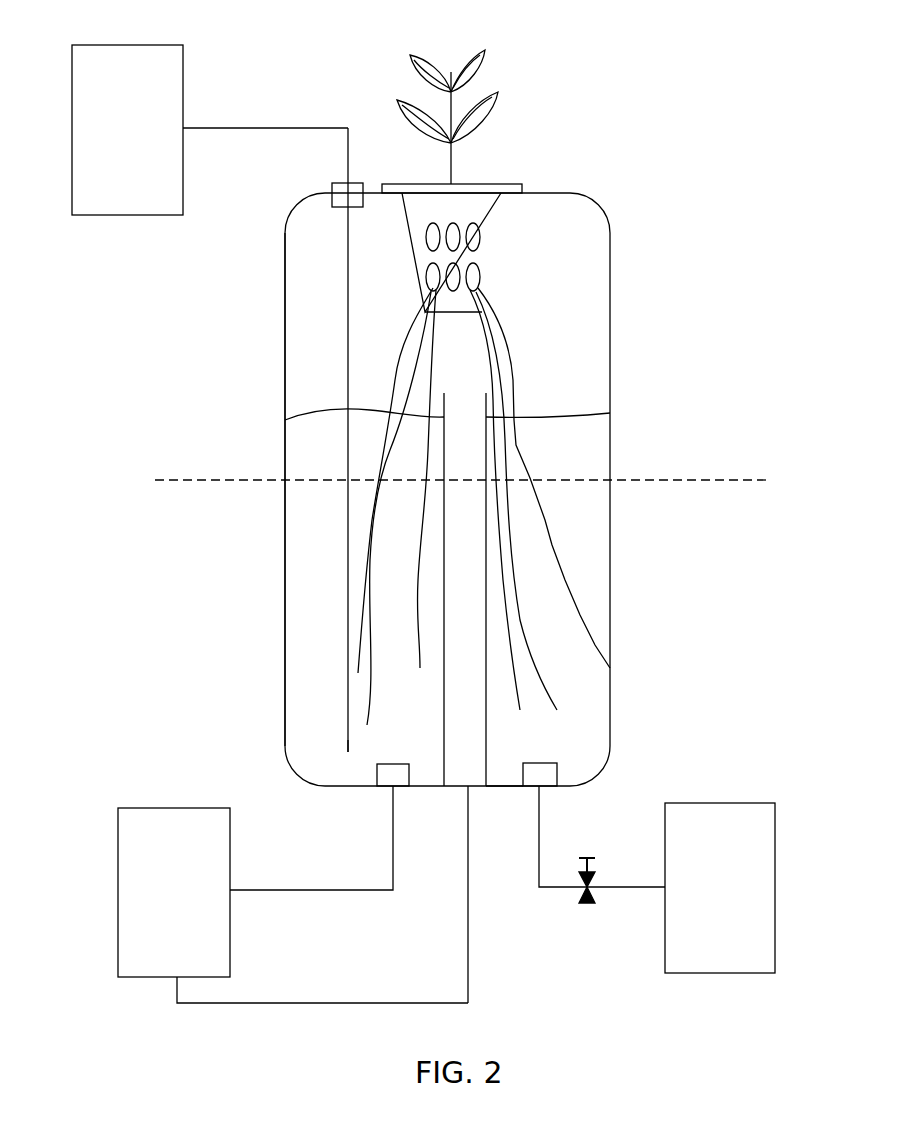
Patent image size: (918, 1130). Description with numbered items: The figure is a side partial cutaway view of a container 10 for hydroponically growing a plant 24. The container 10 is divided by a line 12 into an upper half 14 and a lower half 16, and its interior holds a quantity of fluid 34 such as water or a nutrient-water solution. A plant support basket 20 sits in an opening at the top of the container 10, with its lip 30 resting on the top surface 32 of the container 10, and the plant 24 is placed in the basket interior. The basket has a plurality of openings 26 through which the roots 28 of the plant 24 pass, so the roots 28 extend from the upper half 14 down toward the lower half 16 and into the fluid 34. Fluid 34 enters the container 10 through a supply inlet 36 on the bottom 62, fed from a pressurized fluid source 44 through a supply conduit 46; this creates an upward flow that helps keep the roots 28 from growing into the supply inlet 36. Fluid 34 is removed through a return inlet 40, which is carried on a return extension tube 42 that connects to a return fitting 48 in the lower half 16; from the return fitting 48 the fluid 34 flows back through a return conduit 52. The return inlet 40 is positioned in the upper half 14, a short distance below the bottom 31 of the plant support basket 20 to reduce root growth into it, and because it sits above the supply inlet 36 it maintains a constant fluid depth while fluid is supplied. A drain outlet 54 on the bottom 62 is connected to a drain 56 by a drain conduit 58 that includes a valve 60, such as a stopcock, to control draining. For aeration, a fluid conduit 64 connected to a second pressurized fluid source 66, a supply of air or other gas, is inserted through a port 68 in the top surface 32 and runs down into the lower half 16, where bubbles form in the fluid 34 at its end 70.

The container 10 is at (652, 270).
The line 12 is at (178, 480).
The upper half 14 is at (285, 275).
The lower half 16 is at (285, 650).
The plant support basket 20 is at (472, 277).
The plant 24 is at (455, 155).
The openings 26 is at (481, 237).
The roots 28 is at (510, 345).
The lip 30 is at (510, 184).
The bottom of plant support basket 31 is at (466, 314).
The top surface 32 is at (332, 196).
The fluid 34 is at (548, 416).
The supply inlet 36 is at (390, 790).
The return inlet 40 is at (490, 570).
The return extension tube 42 is at (486, 710).
The pressurized fluid source 44 is at (178, 808).
The supply conduit 46 is at (300, 890).
The return fitting 48 is at (470, 790).
The return conduit 52 is at (388, 1003).
The drain outlet 54 is at (545, 763).
The drain 56 is at (720, 803).
The drain conduit 58 is at (626, 888).
The valve 60 is at (586, 857).
The bottom 62 is at (500, 784).
The fluid conduit 64 is at (348, 298).
The pressurized fluid source 66 is at (130, 45).
The port 68 is at (357, 183).
The end 70 is at (348, 752).